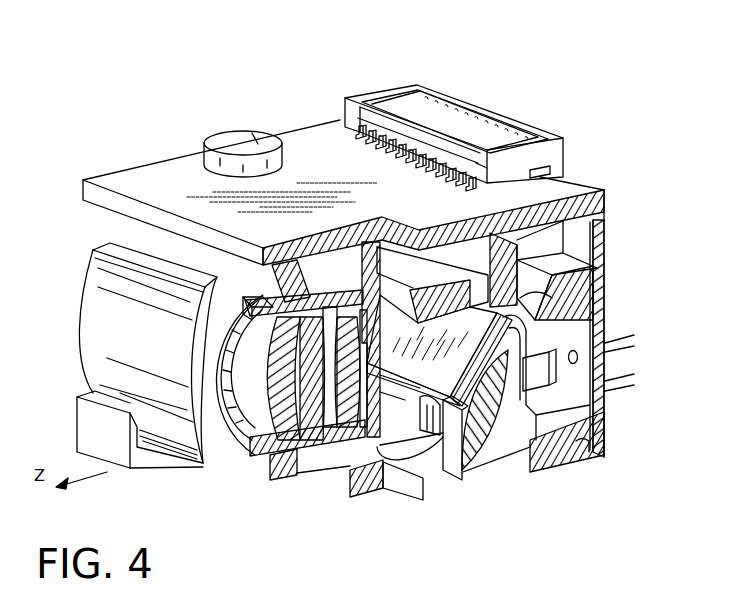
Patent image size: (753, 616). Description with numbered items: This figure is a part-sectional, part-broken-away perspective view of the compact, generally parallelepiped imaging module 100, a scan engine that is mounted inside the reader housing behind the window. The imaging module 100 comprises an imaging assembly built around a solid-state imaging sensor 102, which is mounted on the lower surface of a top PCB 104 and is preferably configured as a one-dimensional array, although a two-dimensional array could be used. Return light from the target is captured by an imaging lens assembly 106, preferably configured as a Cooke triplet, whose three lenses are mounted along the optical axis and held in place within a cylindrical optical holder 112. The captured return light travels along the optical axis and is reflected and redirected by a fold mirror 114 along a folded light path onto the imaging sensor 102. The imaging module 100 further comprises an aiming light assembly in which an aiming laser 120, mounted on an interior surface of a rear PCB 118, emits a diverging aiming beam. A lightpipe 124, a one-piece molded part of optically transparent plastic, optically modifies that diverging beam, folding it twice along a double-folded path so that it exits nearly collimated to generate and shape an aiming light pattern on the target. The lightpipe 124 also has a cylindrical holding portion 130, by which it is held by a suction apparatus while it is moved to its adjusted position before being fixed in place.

The imaging module 100 is at (536, 68).
The solid-state imaging sensor 102 is at (509, 200).
The top PCB 104 is at (160, 183).
The imaging lens assembly 106 is at (256, 400).
The cylindrical optical holder 112 is at (291, 425).
The fold mirror 114 is at (417, 373).
The rear PCB 118 is at (565, 252).
The aiming laser 120 is at (596, 280).
The lightpipe 124 is at (463, 472).
The cylindrical holding portion 130 is at (453, 478).